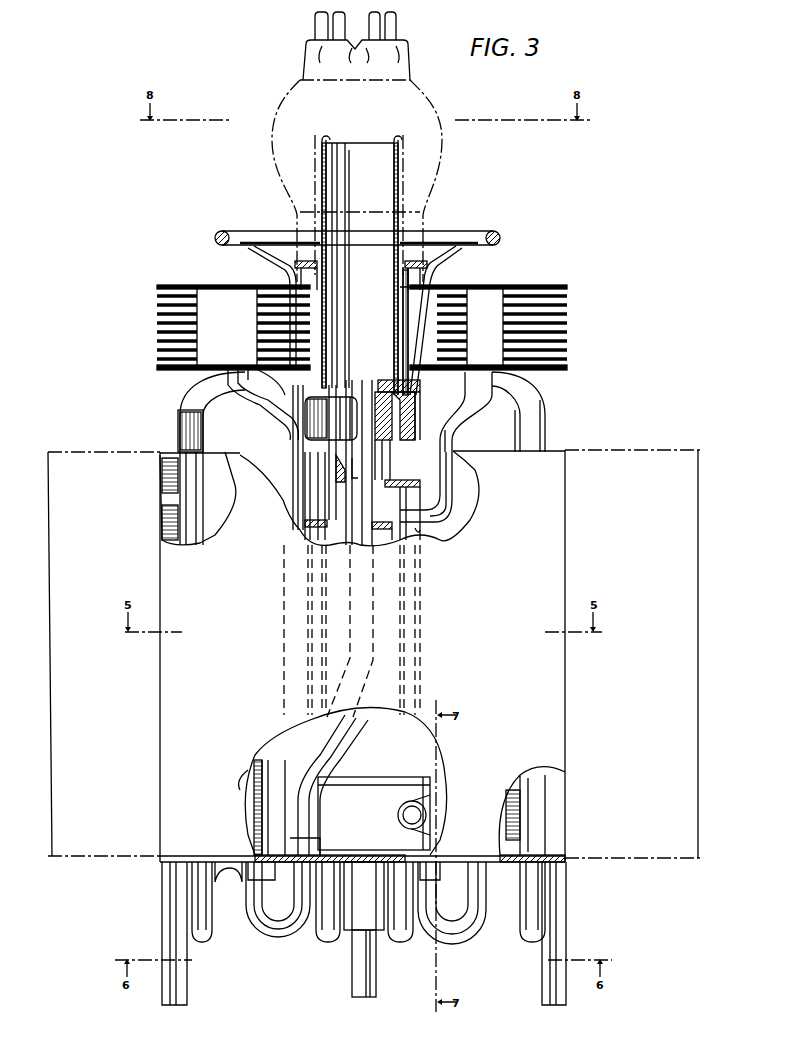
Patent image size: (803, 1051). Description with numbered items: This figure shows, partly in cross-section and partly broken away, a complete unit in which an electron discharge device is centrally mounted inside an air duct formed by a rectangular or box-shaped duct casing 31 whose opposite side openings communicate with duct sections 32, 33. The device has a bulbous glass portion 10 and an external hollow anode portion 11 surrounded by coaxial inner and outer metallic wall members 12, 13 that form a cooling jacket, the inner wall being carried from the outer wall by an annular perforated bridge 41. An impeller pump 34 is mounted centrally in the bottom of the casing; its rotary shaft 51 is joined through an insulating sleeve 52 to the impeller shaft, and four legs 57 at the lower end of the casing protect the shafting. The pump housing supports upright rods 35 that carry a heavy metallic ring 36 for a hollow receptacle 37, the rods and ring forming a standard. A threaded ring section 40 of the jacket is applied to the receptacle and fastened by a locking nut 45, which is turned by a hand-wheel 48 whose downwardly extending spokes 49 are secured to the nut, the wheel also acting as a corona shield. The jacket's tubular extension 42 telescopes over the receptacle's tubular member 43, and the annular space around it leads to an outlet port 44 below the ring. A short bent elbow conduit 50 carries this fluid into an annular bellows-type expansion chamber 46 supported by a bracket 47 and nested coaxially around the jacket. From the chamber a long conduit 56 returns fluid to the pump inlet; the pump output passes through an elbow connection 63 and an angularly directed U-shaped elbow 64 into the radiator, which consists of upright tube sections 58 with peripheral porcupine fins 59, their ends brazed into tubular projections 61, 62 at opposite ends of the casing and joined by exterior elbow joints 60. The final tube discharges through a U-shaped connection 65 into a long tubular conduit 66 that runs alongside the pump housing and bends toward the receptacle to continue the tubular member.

The bulbous glass portion 10 is at (415, 115).
The hollow anode portion 11 is at (393, 232).
The inner wall member 12 is at (405, 266).
The outer wall member 13 is at (403, 293).
The hand-wheel 48 is at (258, 235).
The support arm 49 is at (268, 266).
The expansion chamber 46 is at (565, 323).
The elbow joints 60 is at (190, 400).
The tubular projection 61 is at (178, 442).
The bracket 47 is at (285, 412).
The elbow connection 50 is at (470, 402).
The duct section 32 is at (65, 521).
The duct section 33 is at (628, 462).
The duct casing 31 is at (170, 817).
The porcupine fins 59 is at (176, 484).
The upright tube sections 58 is at (186, 519).
The long conduit 56 is at (293, 490).
The locking nut 45 is at (340, 410).
The tubular member 43 is at (350, 471).
The annular perforated bridge 41 is at (413, 386).
The threaded ring section 40 is at (416, 400).
The hollow receptacle 37 is at (383, 462).
The tubular extension 42 is at (362, 473).
The metallic ring 36 is at (420, 489).
The outlet port 44 is at (448, 506).
The upright rods 35 is at (305, 525).
The impeller pump 34 is at (432, 798).
The long tubular conduit 66 is at (333, 731).
The elbow connection 63 is at (428, 821).
The legs 57 is at (172, 891).
The tubular projection 62 is at (215, 873).
The U-shaped connection 65 is at (276, 935).
The insulating sleeve 52 is at (352, 922).
The rotary shaft 51 is at (374, 974).
The U-shaped elbow 64 is at (458, 945).